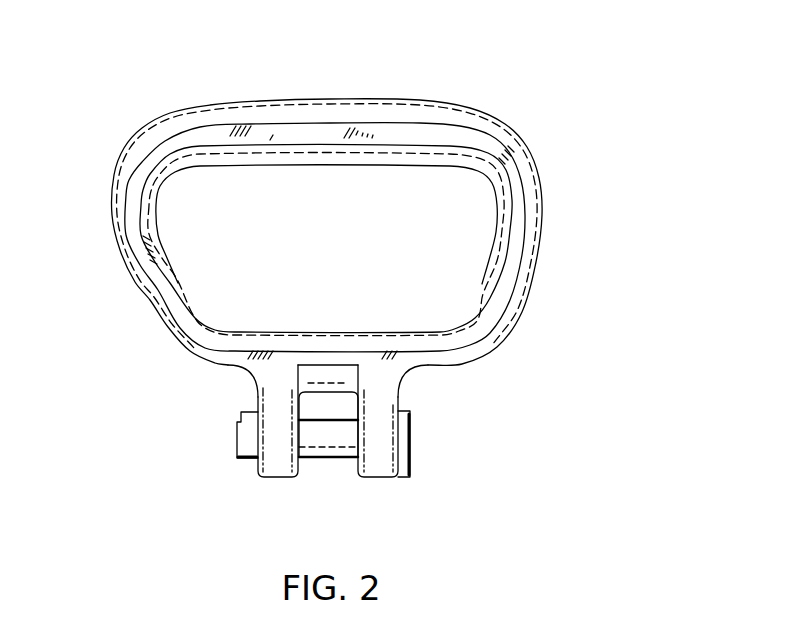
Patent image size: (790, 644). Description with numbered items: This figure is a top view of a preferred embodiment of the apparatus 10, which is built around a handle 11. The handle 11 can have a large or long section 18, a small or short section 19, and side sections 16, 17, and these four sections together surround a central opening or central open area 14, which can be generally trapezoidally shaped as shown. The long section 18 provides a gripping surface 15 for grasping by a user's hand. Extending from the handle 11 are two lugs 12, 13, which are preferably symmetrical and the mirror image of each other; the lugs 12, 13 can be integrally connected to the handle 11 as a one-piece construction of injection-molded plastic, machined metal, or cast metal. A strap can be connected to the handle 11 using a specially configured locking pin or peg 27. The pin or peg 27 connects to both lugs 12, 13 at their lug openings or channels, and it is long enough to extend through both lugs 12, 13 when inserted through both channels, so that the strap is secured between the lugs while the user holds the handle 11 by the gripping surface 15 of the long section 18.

The grip assembly 10 is at (513, 72).
The handle 11 is at (546, 183).
The lug 12 is at (380, 467).
The lug 13 is at (268, 405).
The central opening 14 is at (460, 252).
The gripping surface 15 is at (507, 317).
The side section 16 is at (528, 261).
The side section 17 is at (126, 272).
The long section 18 is at (358, 97).
The short section 19 is at (427, 378).
The locking pin or peg 27 is at (237, 456).